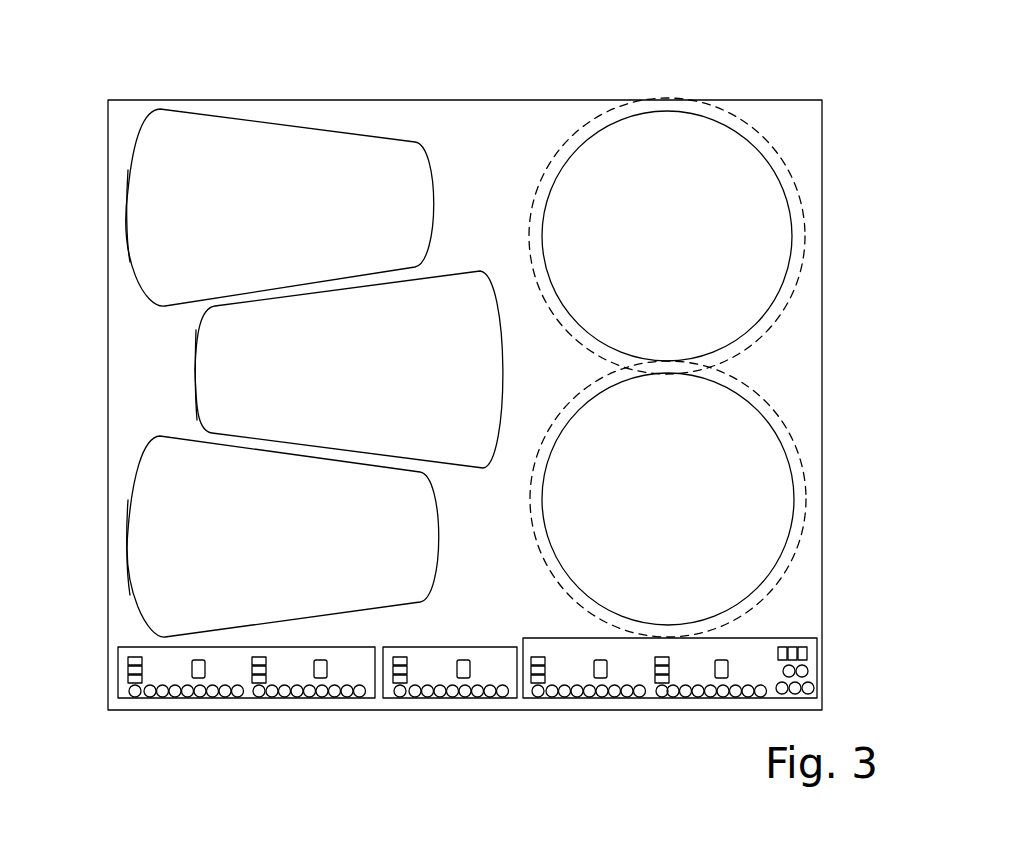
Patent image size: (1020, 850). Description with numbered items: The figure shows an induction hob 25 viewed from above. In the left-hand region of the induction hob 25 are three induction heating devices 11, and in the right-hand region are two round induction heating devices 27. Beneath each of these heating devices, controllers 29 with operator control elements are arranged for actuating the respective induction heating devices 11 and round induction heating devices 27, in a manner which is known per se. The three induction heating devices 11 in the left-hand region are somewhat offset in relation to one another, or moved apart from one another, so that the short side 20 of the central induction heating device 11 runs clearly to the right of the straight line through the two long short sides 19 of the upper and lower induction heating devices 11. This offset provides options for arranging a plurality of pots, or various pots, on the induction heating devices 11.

The induction heating device 11 is at (282, 213).
The long short side 19 is at (125, 208).
The short side 20 is at (194, 367).
The induction hob 25 is at (465, 358).
The round induction heating device 27 is at (683, 243).
The controller 29 is at (248, 697).